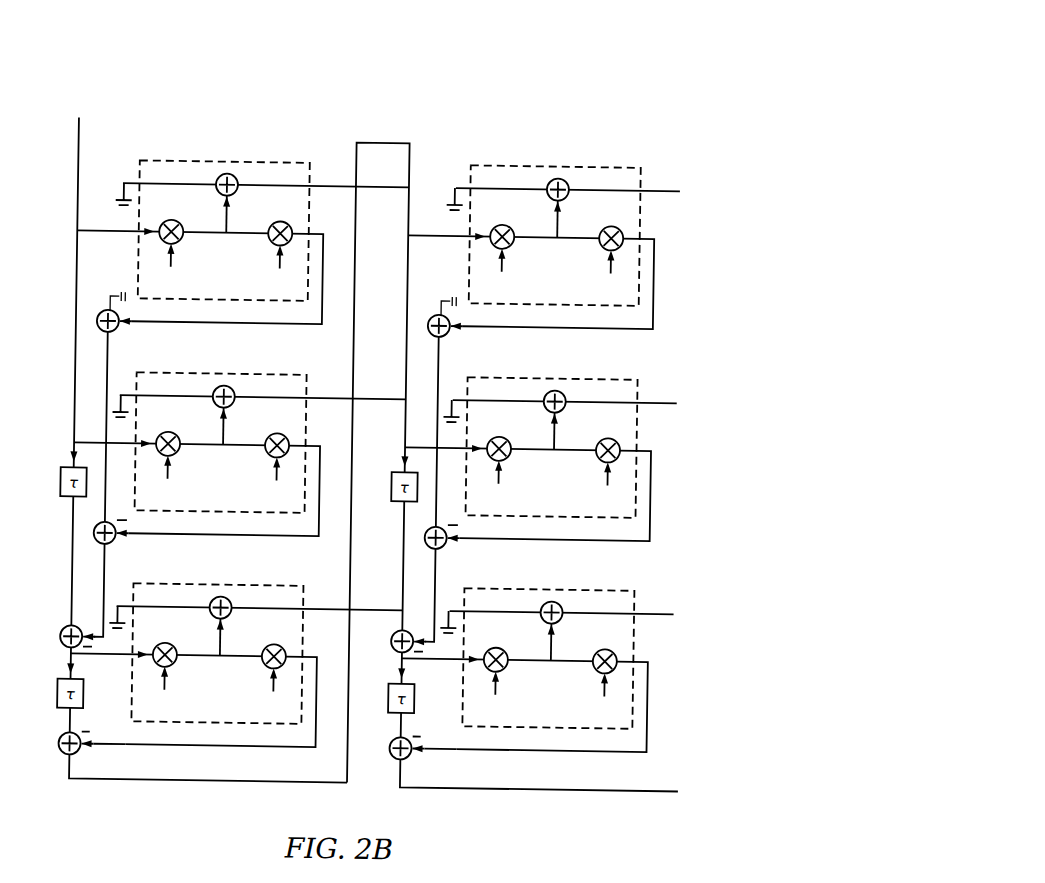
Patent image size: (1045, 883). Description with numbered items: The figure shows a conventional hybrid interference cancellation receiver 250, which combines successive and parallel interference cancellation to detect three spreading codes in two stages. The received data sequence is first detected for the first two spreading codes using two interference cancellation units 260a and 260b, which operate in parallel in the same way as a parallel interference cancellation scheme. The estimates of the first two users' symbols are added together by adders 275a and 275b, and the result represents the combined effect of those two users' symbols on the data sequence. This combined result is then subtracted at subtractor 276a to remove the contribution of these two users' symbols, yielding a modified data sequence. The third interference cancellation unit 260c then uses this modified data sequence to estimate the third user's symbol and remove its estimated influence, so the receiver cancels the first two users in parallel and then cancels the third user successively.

The hybrid interference cancellation receiver 250 is at (357, 399).
The first interference cancellation unit 260a is at (173, 165).
The second interference cancellation unit 260b is at (172, 376).
The third interference cancellation unit 260c is at (170, 588).
The adder 275a is at (97, 334).
The adder 275b is at (99, 543).
The subtractor 276a is at (65, 647).